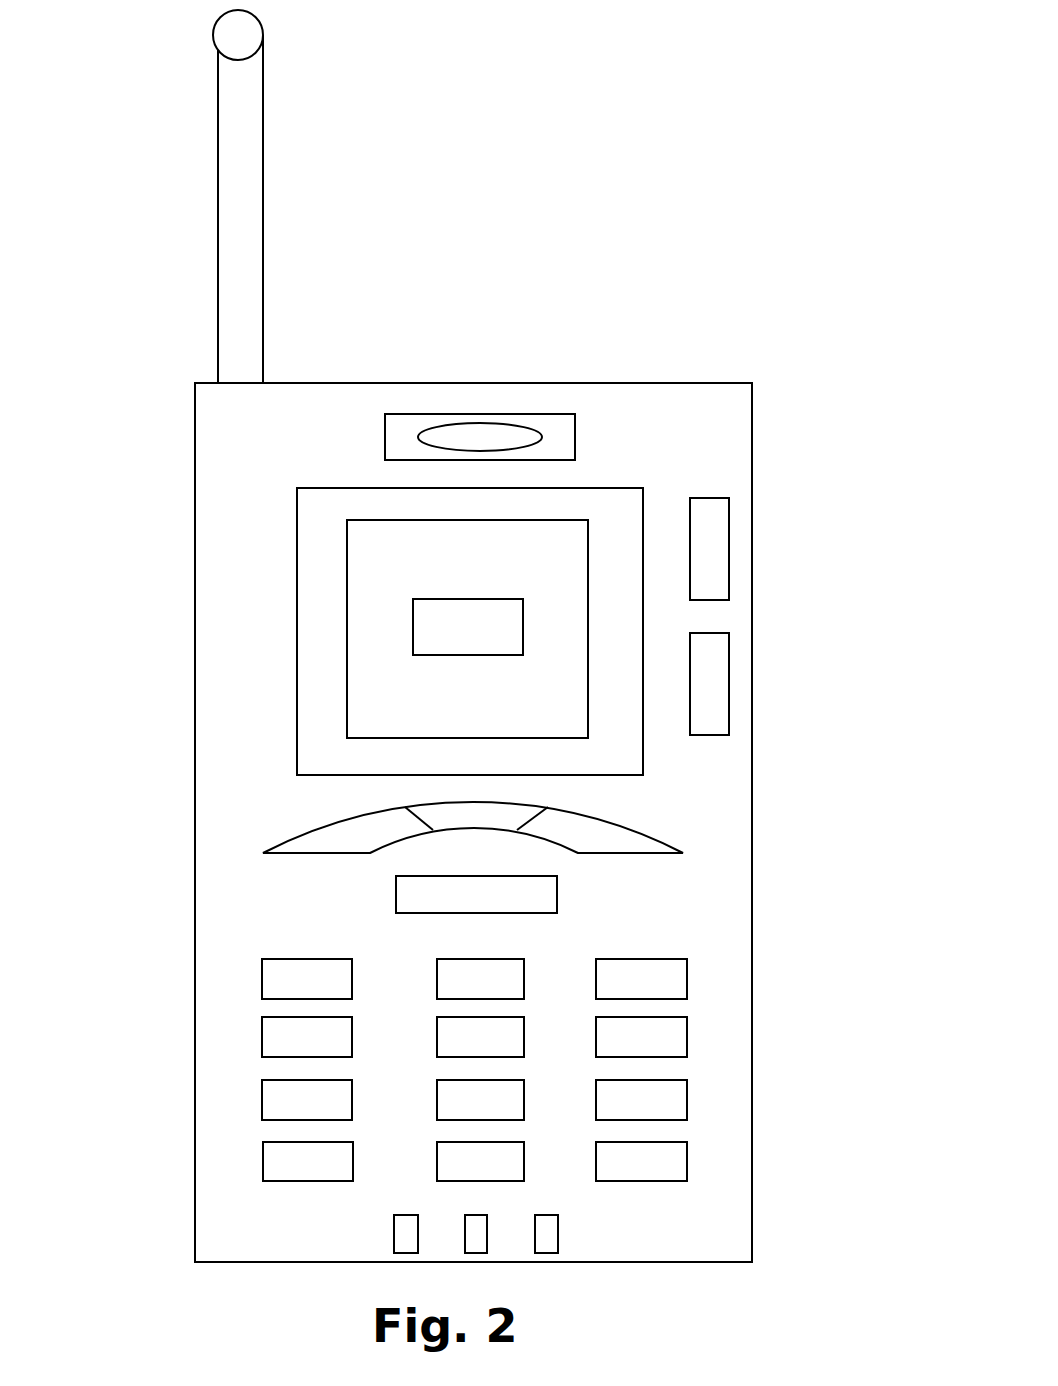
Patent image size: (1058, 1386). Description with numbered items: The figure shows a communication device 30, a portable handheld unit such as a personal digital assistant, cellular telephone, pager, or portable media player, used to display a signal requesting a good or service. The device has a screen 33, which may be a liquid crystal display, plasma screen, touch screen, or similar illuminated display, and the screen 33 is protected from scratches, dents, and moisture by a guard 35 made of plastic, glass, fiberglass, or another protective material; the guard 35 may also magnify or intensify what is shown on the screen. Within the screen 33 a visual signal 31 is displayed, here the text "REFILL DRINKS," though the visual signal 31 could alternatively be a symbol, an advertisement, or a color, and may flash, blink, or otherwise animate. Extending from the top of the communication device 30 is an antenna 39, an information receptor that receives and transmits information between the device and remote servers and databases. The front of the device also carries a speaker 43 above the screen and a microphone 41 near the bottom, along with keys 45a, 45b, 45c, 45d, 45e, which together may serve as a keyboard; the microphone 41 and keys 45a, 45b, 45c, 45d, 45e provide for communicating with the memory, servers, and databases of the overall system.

The communication device 30 is at (858, 1189).
The visual signal 31 is at (413, 627).
The screen 33 is at (370, 723).
The guard 35 is at (318, 563).
The antenna 39 is at (218, 353).
The microphone 41 is at (408, 1233).
The speaker 43 is at (557, 427).
The keys 45a is at (655, 1102).
The keys 45b is at (512, 891).
The keys 45c is at (342, 830).
The keys 45d is at (710, 677).
The keys 45e is at (712, 543).